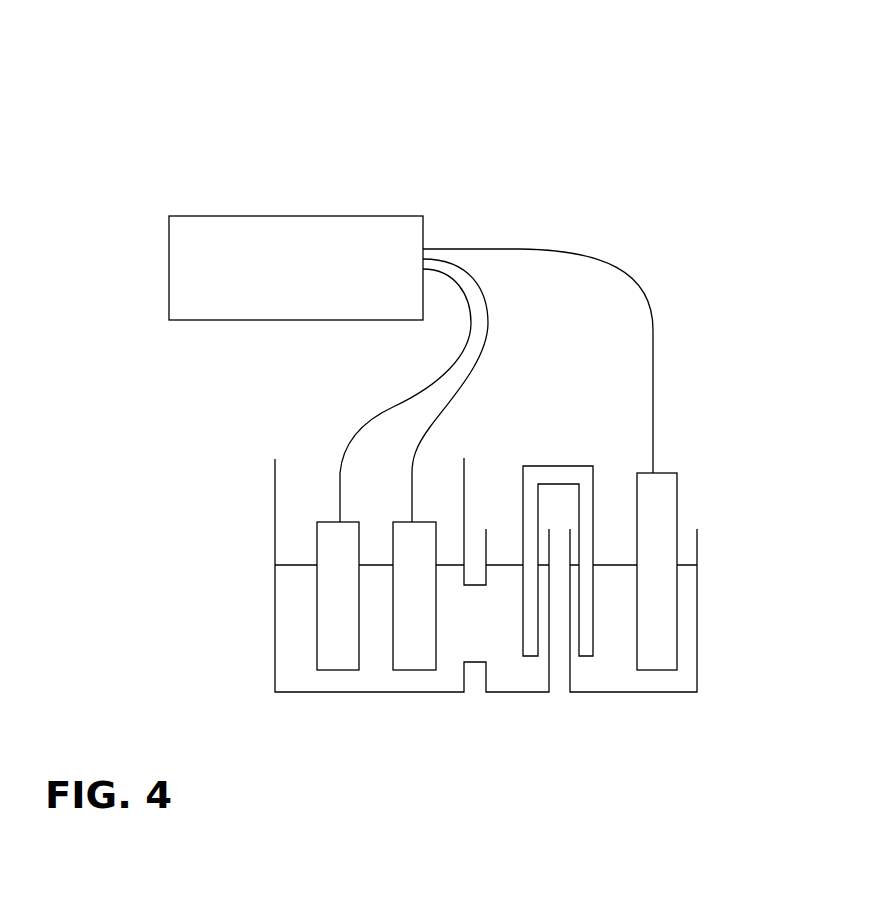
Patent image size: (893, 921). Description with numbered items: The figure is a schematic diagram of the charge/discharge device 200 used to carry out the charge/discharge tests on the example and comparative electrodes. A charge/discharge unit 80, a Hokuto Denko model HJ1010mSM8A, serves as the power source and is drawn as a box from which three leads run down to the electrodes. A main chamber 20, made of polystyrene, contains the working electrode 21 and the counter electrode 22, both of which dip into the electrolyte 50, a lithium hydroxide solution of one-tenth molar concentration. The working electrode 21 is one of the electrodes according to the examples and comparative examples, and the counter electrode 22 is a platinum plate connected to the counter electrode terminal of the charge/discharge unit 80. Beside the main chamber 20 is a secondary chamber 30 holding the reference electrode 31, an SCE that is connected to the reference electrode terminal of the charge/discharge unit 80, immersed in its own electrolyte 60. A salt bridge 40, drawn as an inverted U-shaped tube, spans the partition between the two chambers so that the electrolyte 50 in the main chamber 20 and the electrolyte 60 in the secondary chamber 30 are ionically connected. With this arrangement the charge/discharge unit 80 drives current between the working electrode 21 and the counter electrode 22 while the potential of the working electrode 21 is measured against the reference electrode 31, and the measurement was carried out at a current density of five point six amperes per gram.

The charge/discharge device 200 is at (427, 130).
The charge/discharge unit 80 is at (280, 243).
The main chamber 20 is at (367, 692).
The working electrode 21 is at (337, 622).
The counter electrode 22 is at (417, 642).
The secondary chamber 30 is at (633, 693).
The reference electrode 31 is at (662, 647).
The salt bridge 40 is at (557, 472).
The electrolyte 50 is at (290, 592).
The electrolyte 60 is at (687, 600).